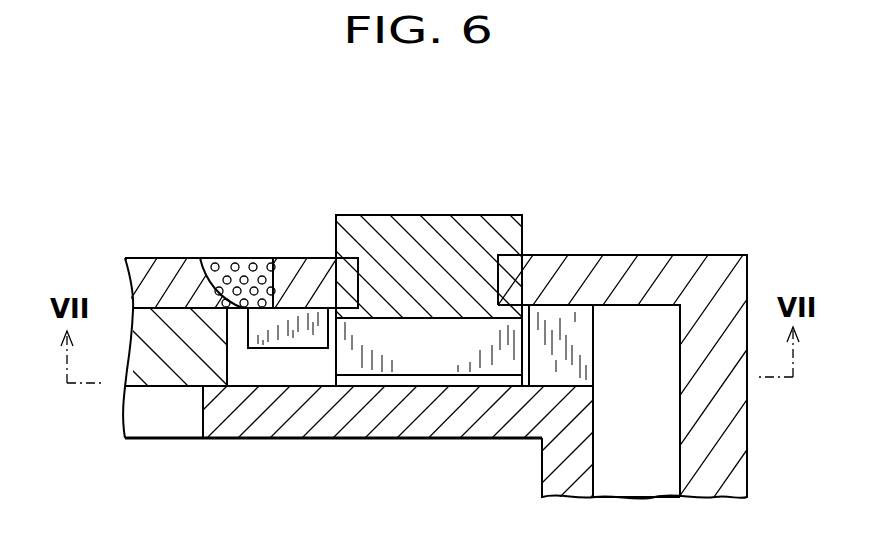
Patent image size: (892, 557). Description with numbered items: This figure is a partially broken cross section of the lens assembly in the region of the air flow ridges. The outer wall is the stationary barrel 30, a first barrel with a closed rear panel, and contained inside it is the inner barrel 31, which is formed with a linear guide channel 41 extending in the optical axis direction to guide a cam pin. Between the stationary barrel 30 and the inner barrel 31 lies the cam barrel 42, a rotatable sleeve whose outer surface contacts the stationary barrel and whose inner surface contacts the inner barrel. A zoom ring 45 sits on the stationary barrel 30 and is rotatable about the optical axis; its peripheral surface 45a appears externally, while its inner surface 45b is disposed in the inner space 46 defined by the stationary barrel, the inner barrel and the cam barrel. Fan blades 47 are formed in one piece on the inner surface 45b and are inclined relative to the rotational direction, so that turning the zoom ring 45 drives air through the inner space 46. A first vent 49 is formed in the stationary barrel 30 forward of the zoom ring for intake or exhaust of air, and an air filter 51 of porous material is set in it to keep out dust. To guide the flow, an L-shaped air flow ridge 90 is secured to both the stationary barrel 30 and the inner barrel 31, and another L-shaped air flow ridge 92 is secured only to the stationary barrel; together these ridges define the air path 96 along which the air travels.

The stationary barrel 30 is at (157, 268).
The inner barrel 31 is at (228, 440).
The linear guide channel 41 is at (203, 413).
The cam barrel 42 is at (143, 380).
The zoom ring 45 is at (387, 215).
The peripheral surface 45a is at (449, 215).
The inner surface 45b is at (396, 322).
The inner space 46 is at (663, 447).
The fan blade 47 is at (408, 378).
The first vent 49 is at (226, 268).
The air filter 51 is at (263, 268).
The air flow ridge 90 is at (583, 353).
The air flow ridge 92 is at (286, 348).
The air path 96 is at (528, 353).